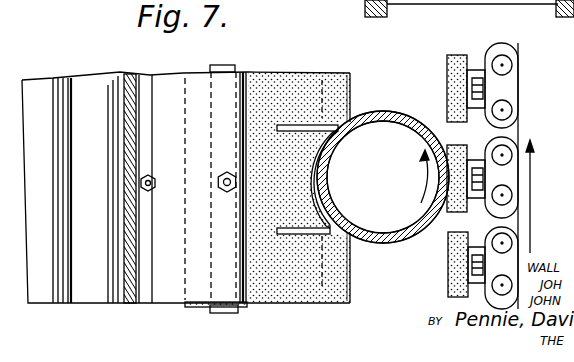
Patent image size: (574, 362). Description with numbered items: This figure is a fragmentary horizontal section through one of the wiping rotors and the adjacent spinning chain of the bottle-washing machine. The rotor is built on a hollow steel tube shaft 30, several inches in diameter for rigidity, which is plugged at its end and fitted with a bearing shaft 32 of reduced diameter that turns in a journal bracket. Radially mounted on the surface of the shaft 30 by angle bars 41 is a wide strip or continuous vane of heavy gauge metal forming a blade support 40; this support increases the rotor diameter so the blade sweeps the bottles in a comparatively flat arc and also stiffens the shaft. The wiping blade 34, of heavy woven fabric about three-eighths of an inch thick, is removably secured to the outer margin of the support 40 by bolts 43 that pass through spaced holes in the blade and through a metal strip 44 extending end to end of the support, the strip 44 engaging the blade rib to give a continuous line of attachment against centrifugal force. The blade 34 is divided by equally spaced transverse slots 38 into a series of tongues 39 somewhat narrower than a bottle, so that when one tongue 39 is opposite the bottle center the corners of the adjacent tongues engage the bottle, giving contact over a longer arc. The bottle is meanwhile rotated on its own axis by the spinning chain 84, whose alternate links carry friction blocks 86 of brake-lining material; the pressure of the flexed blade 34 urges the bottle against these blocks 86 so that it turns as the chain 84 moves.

The shaft 30 is at (123, 80).
The bearing shaft 32 is at (42, 83).
The wiping blade 34 is at (288, 88).
The transverse slot 38 is at (327, 123).
The tongue 39 is at (352, 82).
The blade support 40 is at (183, 73).
The angle bar 41 is at (147, 82).
The bolt 43 is at (228, 190).
The metal strip 44 is at (222, 315).
The spinning chain 84 is at (508, 97).
The friction block 86 is at (447, 207).